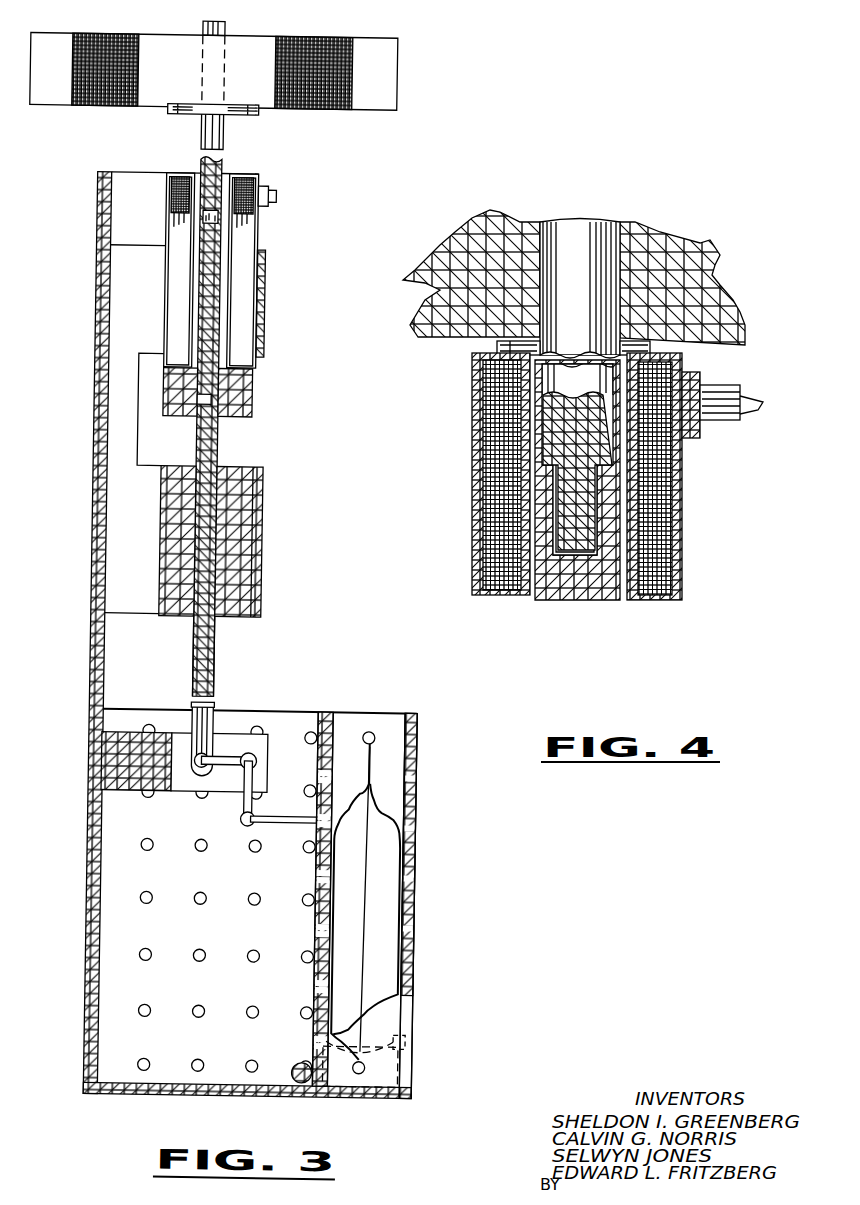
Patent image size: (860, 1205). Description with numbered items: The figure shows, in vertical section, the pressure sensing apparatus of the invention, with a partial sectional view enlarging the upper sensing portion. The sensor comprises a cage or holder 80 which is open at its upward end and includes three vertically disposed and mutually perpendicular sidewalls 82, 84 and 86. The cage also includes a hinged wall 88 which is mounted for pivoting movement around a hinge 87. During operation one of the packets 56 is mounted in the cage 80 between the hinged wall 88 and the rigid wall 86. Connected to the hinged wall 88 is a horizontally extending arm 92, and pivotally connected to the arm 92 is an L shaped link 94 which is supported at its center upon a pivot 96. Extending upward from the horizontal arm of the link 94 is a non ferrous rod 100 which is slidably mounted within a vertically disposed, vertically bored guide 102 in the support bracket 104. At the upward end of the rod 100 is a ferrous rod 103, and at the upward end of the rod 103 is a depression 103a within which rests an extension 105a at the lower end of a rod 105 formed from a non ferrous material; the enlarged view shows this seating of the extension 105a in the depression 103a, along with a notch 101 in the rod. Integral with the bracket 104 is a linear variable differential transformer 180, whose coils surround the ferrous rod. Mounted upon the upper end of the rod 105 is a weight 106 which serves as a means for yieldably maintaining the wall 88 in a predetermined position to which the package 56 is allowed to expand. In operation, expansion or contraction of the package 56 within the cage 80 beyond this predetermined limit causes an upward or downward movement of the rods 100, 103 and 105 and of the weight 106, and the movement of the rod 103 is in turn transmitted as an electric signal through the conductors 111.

In FIG. 3, the weight 106 is at (313, 56).
In FIG. 4, the weight 106 is at (456, 241).
In FIG. 3, the rod 105 is at (203, 138).
In FIG. 4, the rod 105 is at (576, 237).
In FIG. 3, the conductors 111 is at (268, 196).
In FIG. 3, the linear variable differential transformer 180 is at (172, 210).
In FIG. 4, the linear variable differential transformer 180 is at (497, 387).
In FIG. 3, the notch 101 is at (208, 217).
In FIG. 3, the extension 105a is at (204, 222).
In FIG. 4, the extension 105a is at (583, 493).
In FIG. 3, the ferrous rod 103 is at (200, 386).
In FIG. 4, the ferrous rod 103 is at (585, 582).
In FIG. 4, the depression 103a is at (577, 551).
In FIG. 3, the support bracket 104 is at (130, 457).
In FIG. 3, the guide 102 is at (216, 537).
In FIG. 3, the non ferrous rod 100 is at (200, 656).
In FIG. 3, the pivot 96 is at (252, 753).
In FIG. 3, the L shaped link 94 is at (246, 813).
In FIG. 3, the horizontally extending arm 92 is at (287, 826).
In FIG. 3, the cage 80 is at (416, 796).
In FIG. 3, the sidewall 82 is at (110, 938).
In FIG. 3, the hinged wall 88 is at (320, 945).
In FIG. 3, the rigid wall 86 is at (412, 952).
In FIG. 3, the hinge 87 is at (300, 1067).
In FIG. 3, the sidewall 84 is at (388, 1066).
In FIG. 3, the packet 56 is at (372, 868).